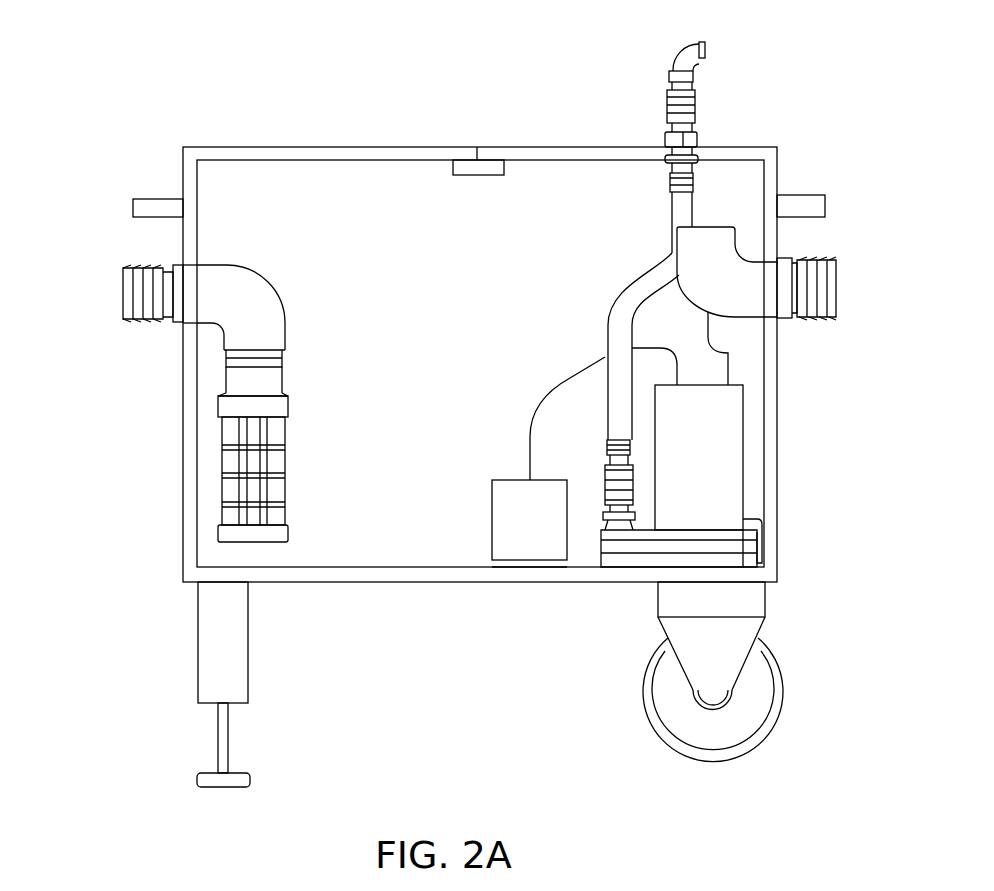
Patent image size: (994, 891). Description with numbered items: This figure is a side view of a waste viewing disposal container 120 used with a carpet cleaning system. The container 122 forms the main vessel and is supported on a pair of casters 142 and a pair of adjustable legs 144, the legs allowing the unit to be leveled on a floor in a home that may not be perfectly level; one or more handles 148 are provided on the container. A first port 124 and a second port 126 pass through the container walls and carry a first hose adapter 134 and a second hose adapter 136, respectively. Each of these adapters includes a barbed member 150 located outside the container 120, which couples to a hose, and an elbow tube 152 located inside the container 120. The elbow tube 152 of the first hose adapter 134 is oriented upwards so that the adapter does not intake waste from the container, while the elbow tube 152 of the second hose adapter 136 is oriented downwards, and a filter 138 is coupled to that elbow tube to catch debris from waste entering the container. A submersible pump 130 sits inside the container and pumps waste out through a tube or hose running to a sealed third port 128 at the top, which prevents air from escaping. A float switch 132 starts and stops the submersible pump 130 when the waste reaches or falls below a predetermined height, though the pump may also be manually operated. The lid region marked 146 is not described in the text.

The waste viewing disposal container 120 is at (200, 82).
The container 122 is at (183, 533).
The first port 124 is at (768, 305).
The second port 126 is at (188, 312).
The third port 128 is at (696, 112).
The submersible pump 130 is at (745, 455).
The float switch 132 is at (530, 567).
The first hose adapter 134 is at (838, 288).
The second hose adapter 136 is at (117, 292).
The filter 138 is at (288, 465).
The casters 142 is at (785, 690).
The adjustable legs 144 is at (211, 632).
The lid 146 is at (328, 147).
The handles 148 is at (145, 199).
The barbed member 150 is at (130, 265).
The elbow tube 152 is at (263, 297).